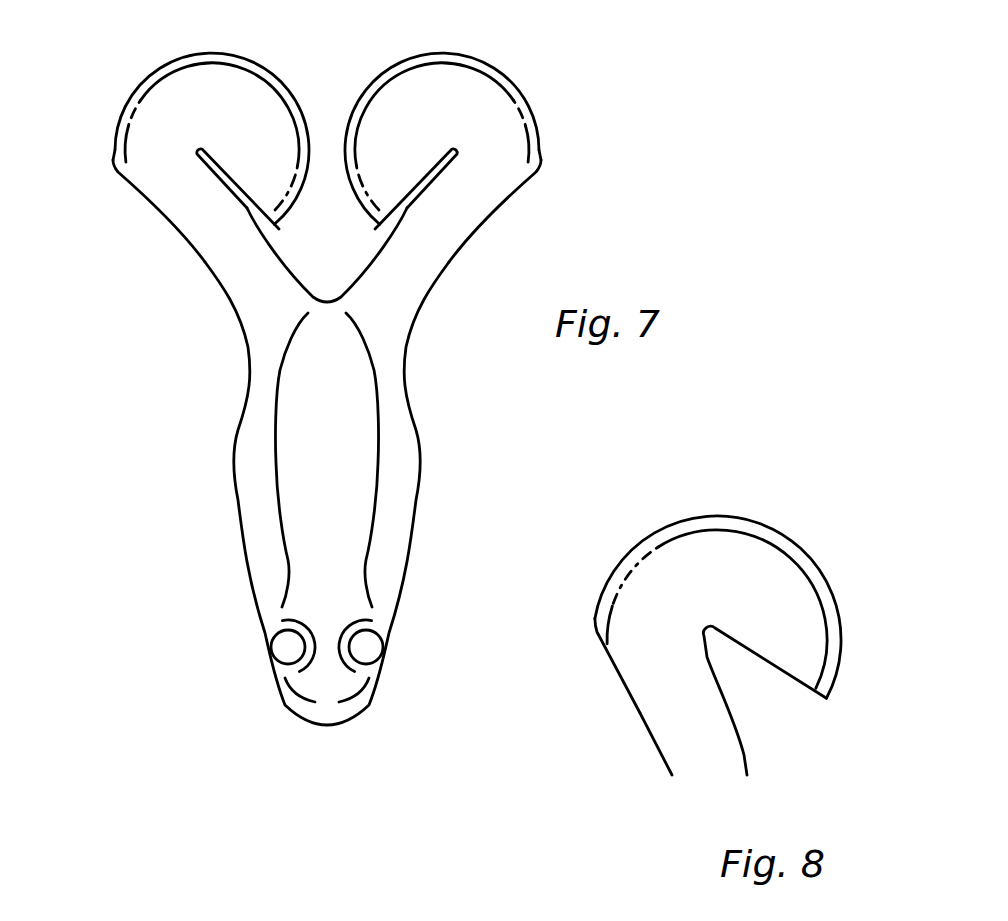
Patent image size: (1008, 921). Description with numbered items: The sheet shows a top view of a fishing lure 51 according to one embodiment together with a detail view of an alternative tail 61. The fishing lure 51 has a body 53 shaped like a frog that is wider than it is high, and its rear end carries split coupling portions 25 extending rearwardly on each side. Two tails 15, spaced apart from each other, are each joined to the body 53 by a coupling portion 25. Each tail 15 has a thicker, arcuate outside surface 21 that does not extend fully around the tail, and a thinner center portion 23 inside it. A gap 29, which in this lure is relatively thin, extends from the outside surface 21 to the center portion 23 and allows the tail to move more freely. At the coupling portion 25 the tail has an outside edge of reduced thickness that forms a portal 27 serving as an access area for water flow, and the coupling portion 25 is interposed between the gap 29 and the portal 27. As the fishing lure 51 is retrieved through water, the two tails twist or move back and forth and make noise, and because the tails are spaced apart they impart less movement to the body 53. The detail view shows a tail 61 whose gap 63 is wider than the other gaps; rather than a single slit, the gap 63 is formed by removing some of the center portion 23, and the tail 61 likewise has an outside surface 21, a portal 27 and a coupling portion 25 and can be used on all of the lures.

In FIG. 7, the tail 15 is at (195, 75).
In FIG. 7, the outside surface 21 is at (112, 141).
In FIG. 8, the outside surface 21 is at (823, 578).
In FIG. 7, the center portion 23 is at (390, 118).
In FIG. 8, the center portion 23 is at (760, 585).
In FIG. 7, the coupling portion 25 is at (243, 279).
In FIG. 8, the coupling portion 25 is at (682, 725).
In FIG. 7, the portal 27 is at (127, 173).
In FIG. 8, the portal 27 is at (623, 677).
In FIG. 7, the gap 29 is at (242, 200).
In FIG. 7, the fishing lure 51 is at (170, 516).
In FIG. 7, the body 53 is at (277, 562).
In FIG. 8, the tail 61 is at (660, 573).
In FIG. 8, the gap 63 is at (763, 697).